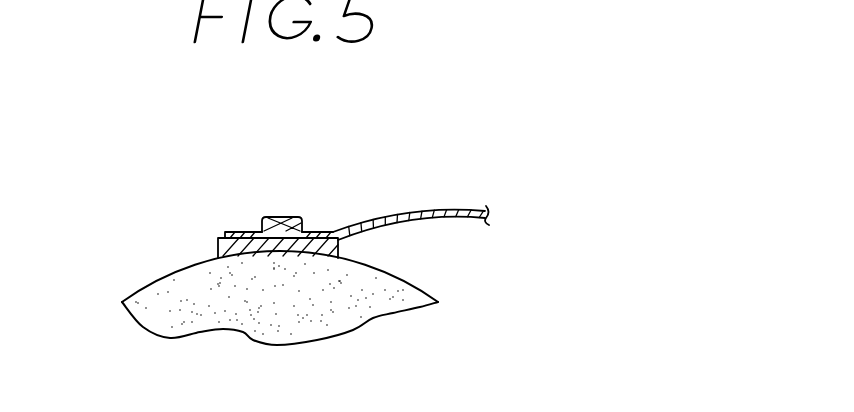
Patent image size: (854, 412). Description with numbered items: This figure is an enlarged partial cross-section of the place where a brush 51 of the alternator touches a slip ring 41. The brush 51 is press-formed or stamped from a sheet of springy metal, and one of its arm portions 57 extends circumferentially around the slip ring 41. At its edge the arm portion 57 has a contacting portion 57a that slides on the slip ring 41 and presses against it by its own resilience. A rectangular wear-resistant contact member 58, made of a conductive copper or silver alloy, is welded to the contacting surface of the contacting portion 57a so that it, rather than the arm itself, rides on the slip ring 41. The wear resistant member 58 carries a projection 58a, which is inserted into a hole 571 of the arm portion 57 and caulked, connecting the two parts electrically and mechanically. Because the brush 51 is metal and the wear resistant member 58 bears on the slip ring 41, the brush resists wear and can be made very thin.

The slip ring 41 is at (157, 313).
The brush 51 is at (467, 191).
The arm portion 57 is at (398, 215).
The contacting portion 57a is at (235, 230).
The hole 571 is at (298, 219).
The wear-resistant contact member 58 is at (218, 245).
The projection 58a is at (264, 217).